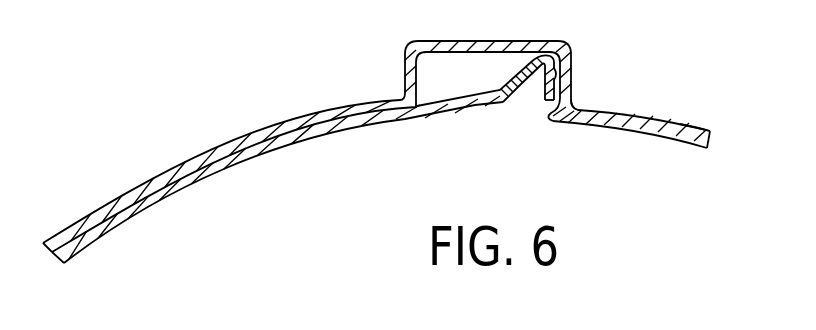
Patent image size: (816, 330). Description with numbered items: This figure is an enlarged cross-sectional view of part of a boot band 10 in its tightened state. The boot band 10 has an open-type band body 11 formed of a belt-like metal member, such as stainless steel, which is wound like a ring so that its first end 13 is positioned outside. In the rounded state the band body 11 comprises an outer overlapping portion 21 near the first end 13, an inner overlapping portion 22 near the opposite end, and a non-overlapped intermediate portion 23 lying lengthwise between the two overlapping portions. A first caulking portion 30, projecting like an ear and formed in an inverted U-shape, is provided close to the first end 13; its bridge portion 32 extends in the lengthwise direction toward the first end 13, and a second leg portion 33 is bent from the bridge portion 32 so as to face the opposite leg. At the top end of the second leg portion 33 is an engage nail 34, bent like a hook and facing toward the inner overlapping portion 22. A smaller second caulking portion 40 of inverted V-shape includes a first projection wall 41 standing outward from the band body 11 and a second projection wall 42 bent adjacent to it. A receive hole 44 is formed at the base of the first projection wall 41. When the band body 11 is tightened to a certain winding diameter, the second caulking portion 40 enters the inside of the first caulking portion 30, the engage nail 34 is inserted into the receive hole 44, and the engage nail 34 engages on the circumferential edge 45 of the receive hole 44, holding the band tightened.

The boot band 10 is at (155, 122).
The band body 11 is at (692, 128).
The first end 13 is at (571, 102).
The outer overlapping portion 21 is at (252, 133).
The inner overlapping portion 22 is at (238, 160).
The intermediate portion 23 is at (645, 133).
The first caulking portion 30 is at (528, 97).
The bridge portion 32 is at (405, 62).
The second leg portion 33 is at (570, 54).
The engage nail 34 is at (549, 120).
The second caulking portion 40 is at (519, 93).
The first projection wall 41 is at (546, 102).
The second projection wall 42 is at (522, 67).
The receive hole 44 is at (543, 88).
The circumferential edge 45 is at (558, 73).